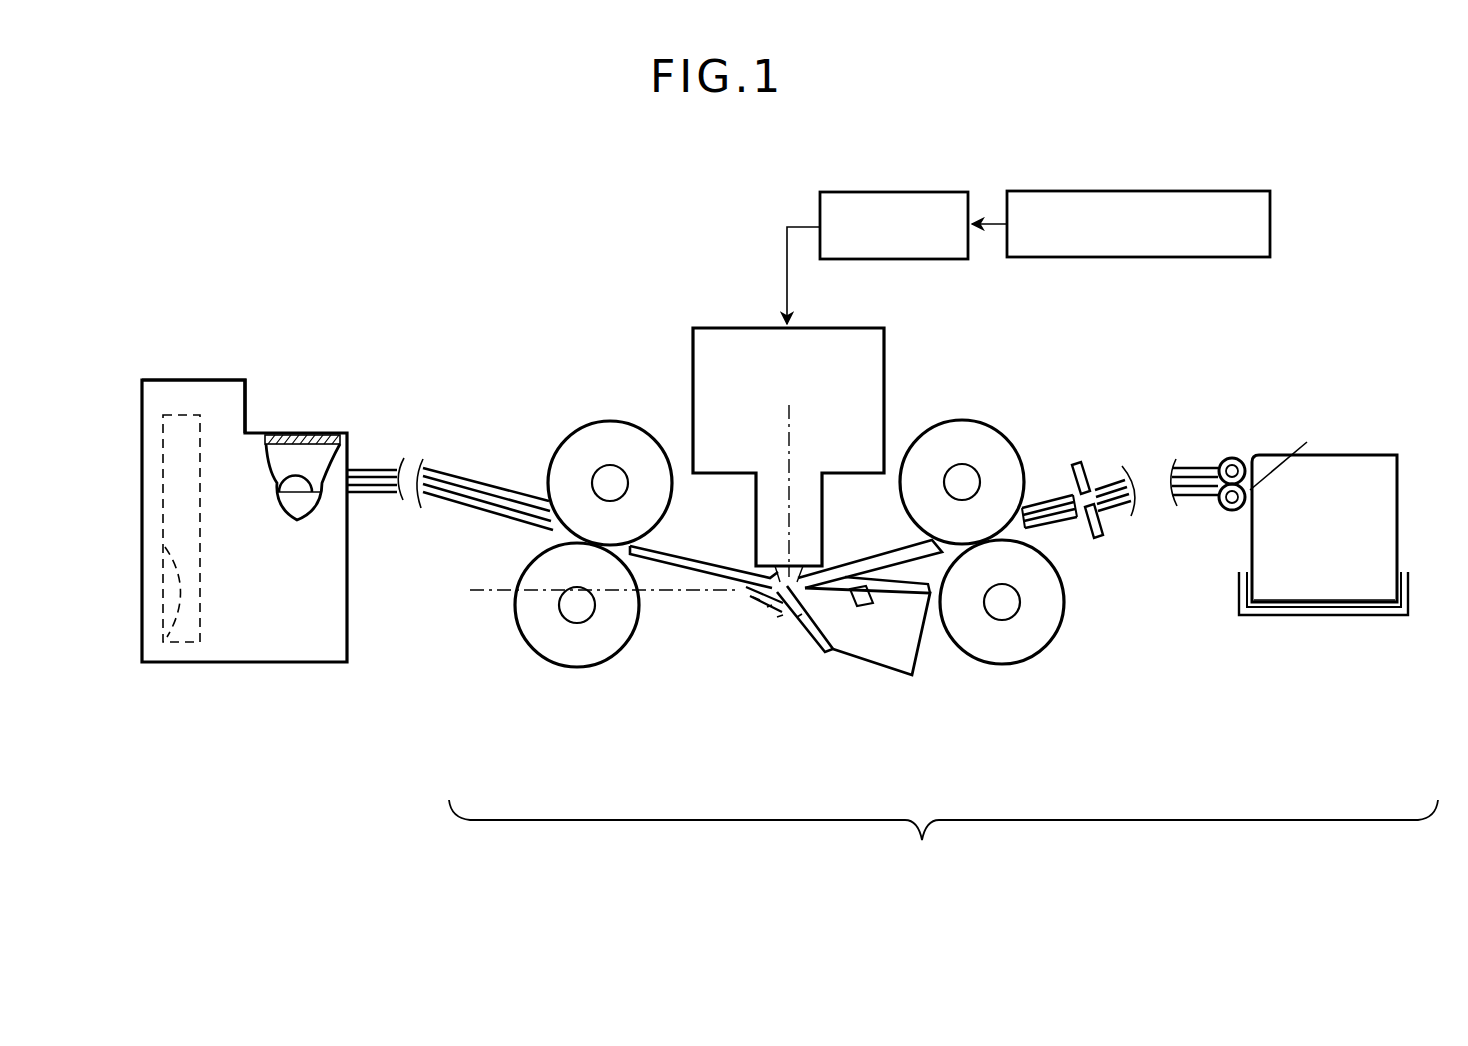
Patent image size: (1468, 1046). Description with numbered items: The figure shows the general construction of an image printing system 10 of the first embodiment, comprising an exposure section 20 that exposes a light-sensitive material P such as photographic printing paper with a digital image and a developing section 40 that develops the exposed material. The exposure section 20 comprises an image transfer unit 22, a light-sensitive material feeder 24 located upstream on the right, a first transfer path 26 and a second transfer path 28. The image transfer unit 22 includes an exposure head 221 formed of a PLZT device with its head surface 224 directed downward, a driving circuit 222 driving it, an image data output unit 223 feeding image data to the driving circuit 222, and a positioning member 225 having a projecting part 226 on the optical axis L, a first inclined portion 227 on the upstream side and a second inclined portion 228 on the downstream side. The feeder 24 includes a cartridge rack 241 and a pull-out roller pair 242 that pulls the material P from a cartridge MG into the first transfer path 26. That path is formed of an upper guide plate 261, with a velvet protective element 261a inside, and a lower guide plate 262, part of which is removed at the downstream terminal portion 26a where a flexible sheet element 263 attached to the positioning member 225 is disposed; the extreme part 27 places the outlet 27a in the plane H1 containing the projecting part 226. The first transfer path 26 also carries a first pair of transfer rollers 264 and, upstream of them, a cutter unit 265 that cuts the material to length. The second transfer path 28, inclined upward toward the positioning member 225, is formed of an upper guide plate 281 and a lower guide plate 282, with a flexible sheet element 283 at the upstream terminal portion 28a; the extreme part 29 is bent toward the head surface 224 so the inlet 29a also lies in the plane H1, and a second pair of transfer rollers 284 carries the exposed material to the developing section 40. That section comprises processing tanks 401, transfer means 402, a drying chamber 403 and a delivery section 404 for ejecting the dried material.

The image printing system 10 is at (738, 153).
The exposure section 20 is at (943, 842).
The image transfer unit 22 is at (965, 353).
The light-sensitive material feeder 24 is at (1346, 535).
The first transfer path 26 is at (1120, 542).
The downstream terminal portion 26a is at (830, 557).
The extreme part 27 is at (802, 563).
The outlet 27a is at (827, 654).
The second transfer path 28 is at (465, 470).
The upstream terminal portion 28a is at (767, 567).
The extreme part 29 is at (772, 562).
The inlet 29a is at (740, 588).
The developing section 40 is at (234, 564).
The exposure head 221 is at (841, 452).
The driving circuit 222 is at (912, 192).
The image data output unit 223 is at (1135, 190).
The head surface 224 is at (752, 557).
The positioning member 225 is at (867, 664).
The projecting part 226 is at (767, 607).
The first inclined portion 227 is at (797, 617).
The second inclined portion 228 is at (753, 597).
The cartridge rack 241 is at (1362, 603).
The pull-out roller pair 242 is at (1230, 453).
The upper guide plate 261 is at (913, 543).
The protective element 261a is at (1037, 520).
The lower guide plate 262 is at (1043, 525).
The flexible sheet element 263 is at (882, 616).
The first pair of transfer rollers 264 is at (990, 453).
The cutter unit 265 is at (1087, 470).
The upper guide plate 281 is at (453, 470).
The lower guide plate 282 is at (465, 532).
The flexible sheet element 283 is at (777, 617).
The second pair of transfer rollers 284 is at (592, 450).
The processing tanks 401 is at (303, 503).
The transfer means 402 is at (283, 483).
The drying chamber 403 is at (163, 645).
The light-sensitive material delivery section 404 is at (222, 403).
The plane H1 is at (588, 595).
The optical axis L is at (788, 425).
The light-sensitive material P is at (1281, 451).
The cartridge MG is at (1378, 498).